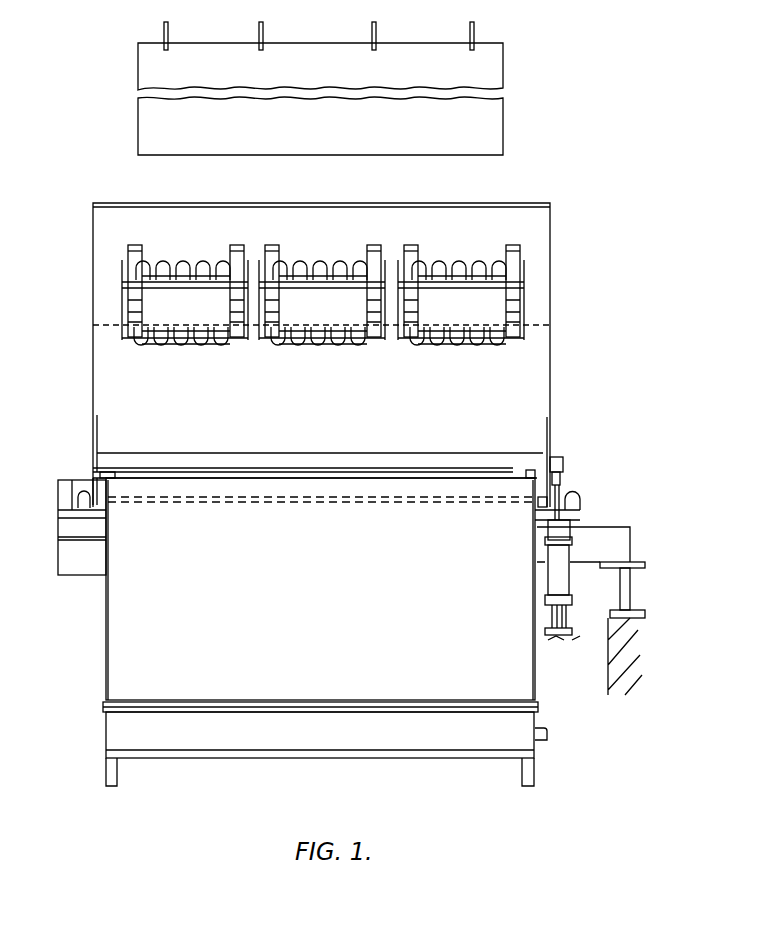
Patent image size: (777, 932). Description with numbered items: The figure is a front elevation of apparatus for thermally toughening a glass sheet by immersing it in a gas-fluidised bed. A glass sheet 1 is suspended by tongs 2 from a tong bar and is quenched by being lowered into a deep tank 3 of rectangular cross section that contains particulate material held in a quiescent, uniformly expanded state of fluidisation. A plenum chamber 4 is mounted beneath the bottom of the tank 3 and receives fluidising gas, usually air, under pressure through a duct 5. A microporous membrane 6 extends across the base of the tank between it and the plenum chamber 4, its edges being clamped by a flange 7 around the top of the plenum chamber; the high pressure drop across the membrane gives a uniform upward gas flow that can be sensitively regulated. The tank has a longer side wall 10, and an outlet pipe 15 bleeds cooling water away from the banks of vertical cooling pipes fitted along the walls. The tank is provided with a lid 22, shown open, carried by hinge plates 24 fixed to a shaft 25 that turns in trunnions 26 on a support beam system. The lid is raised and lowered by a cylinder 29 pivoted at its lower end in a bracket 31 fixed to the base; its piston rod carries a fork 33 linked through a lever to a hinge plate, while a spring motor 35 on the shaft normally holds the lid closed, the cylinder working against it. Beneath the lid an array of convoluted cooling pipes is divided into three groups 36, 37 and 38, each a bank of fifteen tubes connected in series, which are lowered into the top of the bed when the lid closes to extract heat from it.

The glass sheet 1 is at (490, 72).
The tongs 2 is at (477, 42).
The tank 3 is at (98, 648).
The plenum chamber 4 is at (115, 730).
The duct 5 is at (548, 738).
The microporous membrane 6 is at (540, 704).
The flange 7 is at (168, 702).
The side wall 10 is at (118, 617).
The outlet pipe 15 is at (93, 470).
The lid 22 is at (542, 392).
The hinge plates 24 is at (96, 427).
The shaft 25 is at (150, 502).
The trunnions 26 is at (575, 522).
The cylinder 29 is at (562, 580).
The bracket 31 is at (563, 636).
The fork 33 is at (566, 470).
The spring motor 35 is at (62, 490).
The first group of cooling pipes 36 is at (212, 353).
The second group of cooling pipes 37 is at (348, 353).
The third group of cooling pipes 38 is at (473, 353).